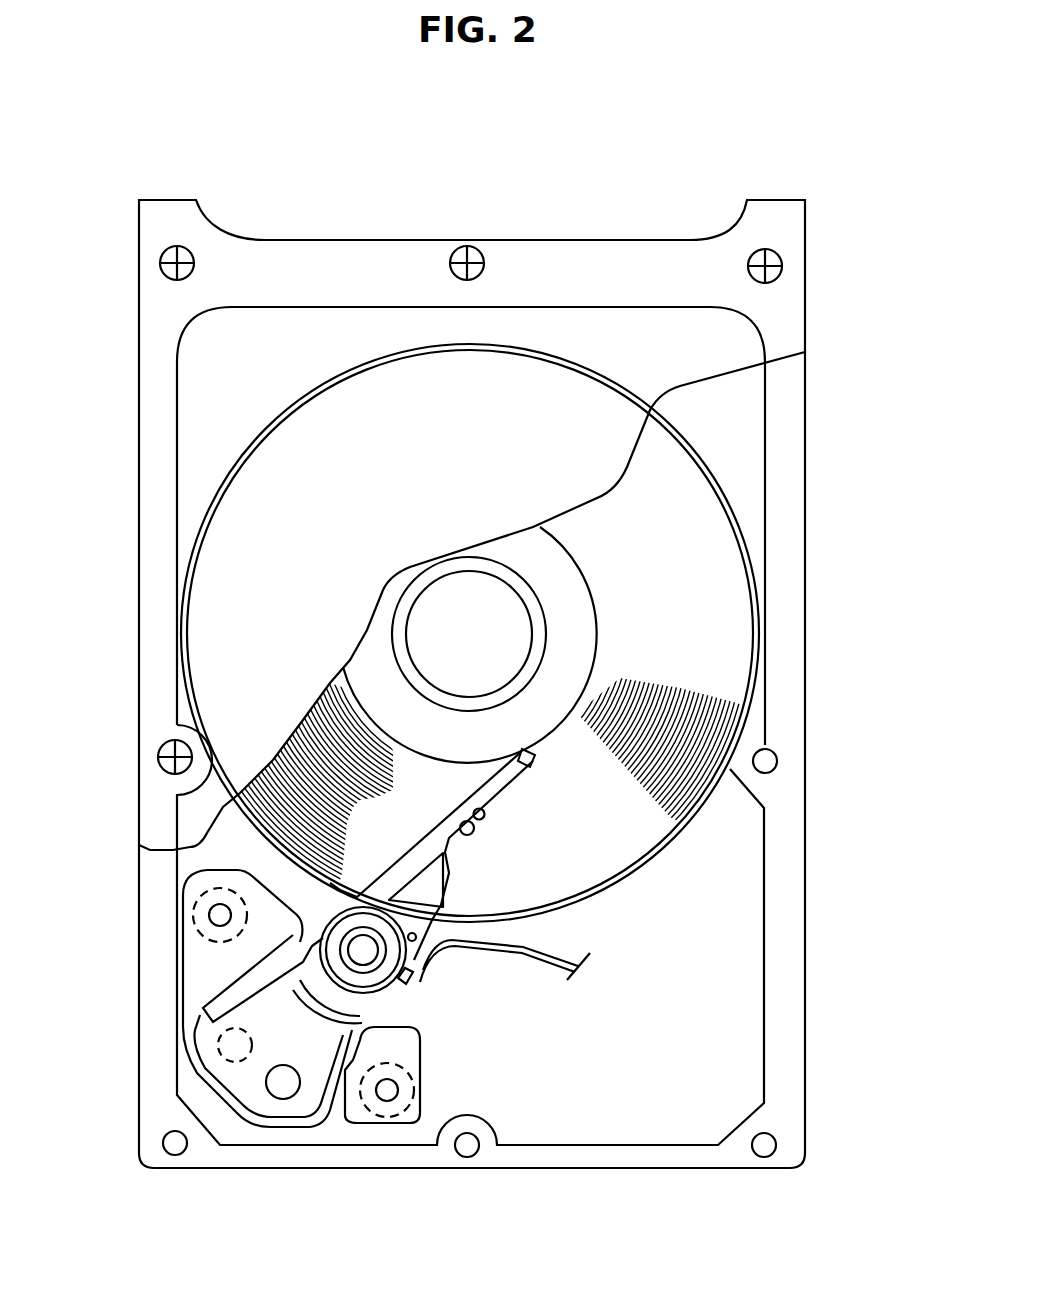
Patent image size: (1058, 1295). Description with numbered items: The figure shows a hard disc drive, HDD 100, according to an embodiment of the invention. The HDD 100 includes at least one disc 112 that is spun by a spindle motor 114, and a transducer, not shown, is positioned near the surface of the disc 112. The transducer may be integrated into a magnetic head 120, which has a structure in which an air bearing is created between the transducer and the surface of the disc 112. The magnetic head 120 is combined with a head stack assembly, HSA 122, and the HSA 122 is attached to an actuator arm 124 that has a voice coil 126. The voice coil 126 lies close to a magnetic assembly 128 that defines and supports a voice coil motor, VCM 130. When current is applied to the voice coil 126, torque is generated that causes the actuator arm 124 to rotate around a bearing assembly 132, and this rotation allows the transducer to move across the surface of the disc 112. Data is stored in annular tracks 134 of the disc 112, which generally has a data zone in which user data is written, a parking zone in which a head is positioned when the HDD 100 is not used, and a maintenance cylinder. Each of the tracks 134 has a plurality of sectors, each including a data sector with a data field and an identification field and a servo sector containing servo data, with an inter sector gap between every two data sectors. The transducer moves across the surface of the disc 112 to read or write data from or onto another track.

The hard disc drive 100 is at (658, 175).
The disc 112 is at (730, 568).
The spindle motor 114 is at (446, 610).
The magnetic head 120 is at (531, 768).
The head stack assembly 122 is at (493, 803).
The actuator arm 124 is at (278, 947).
The voice coil 126 is at (207, 1035).
The magnetic assembly 128 is at (220, 978).
The voice coil motor 130 is at (335, 1103).
The bearing assembly 132 is at (378, 965).
The tracks 134 is at (331, 753).